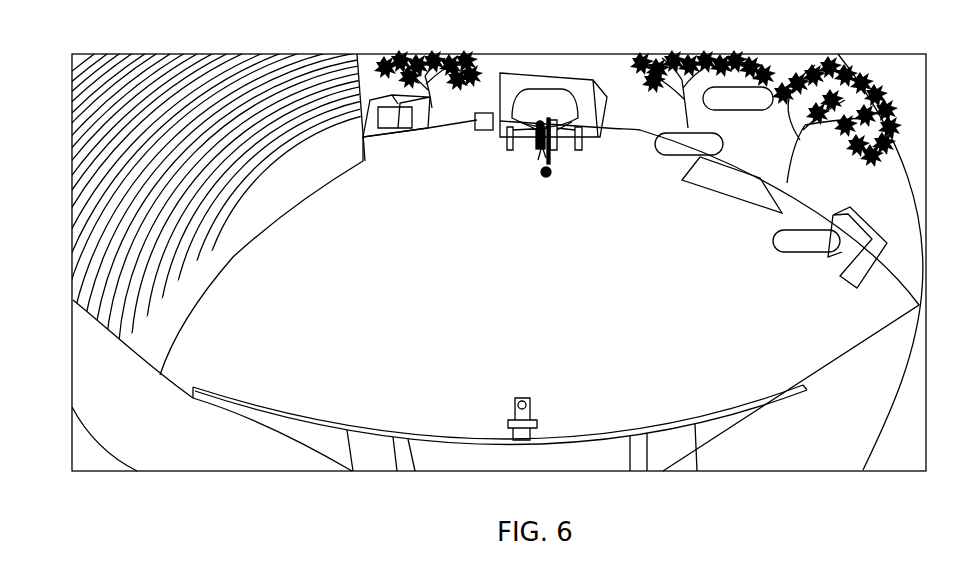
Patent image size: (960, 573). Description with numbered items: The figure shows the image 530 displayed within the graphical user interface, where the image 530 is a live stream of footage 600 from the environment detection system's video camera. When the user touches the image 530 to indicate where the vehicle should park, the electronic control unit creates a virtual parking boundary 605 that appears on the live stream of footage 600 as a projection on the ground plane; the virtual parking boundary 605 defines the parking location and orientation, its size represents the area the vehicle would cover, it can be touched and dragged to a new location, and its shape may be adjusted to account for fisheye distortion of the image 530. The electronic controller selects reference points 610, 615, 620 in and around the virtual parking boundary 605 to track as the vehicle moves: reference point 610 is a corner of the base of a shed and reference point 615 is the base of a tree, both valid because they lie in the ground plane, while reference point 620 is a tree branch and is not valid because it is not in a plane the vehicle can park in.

The image 530 is at (79, 43).
The live stream of footage 600 is at (234, 258).
The virtual parking boundary 605 is at (690, 187).
The reference point 610 is at (775, 251).
The reference point 615 is at (668, 165).
The reference point 620 is at (749, 115).